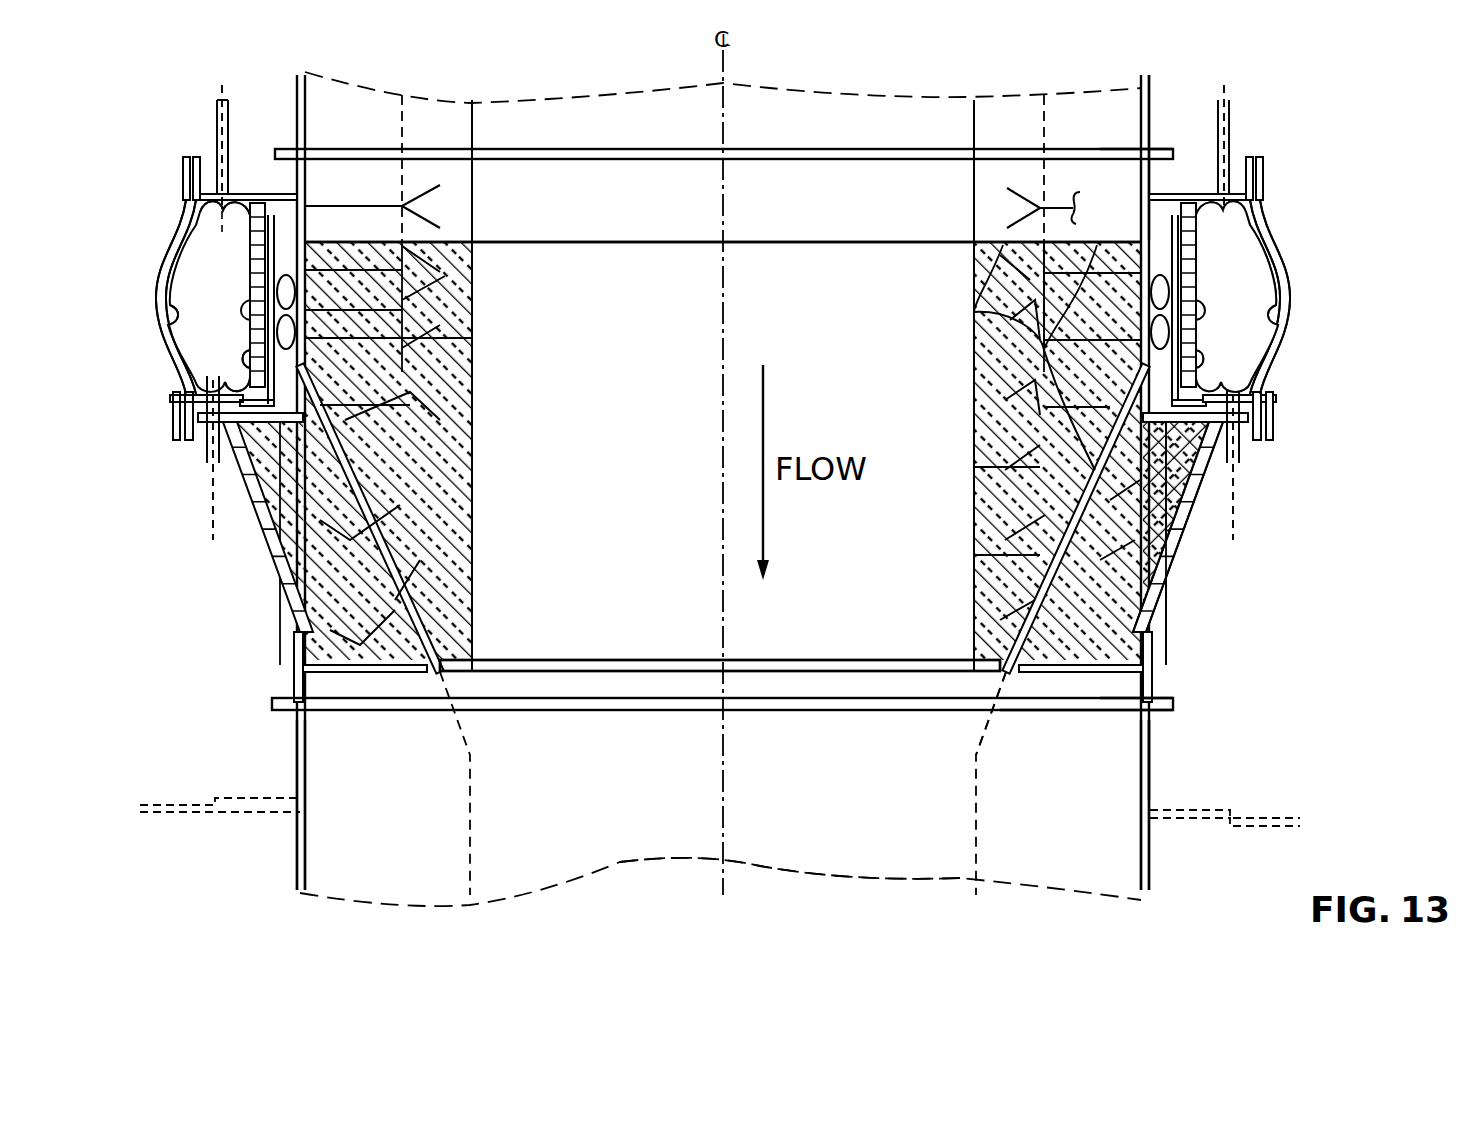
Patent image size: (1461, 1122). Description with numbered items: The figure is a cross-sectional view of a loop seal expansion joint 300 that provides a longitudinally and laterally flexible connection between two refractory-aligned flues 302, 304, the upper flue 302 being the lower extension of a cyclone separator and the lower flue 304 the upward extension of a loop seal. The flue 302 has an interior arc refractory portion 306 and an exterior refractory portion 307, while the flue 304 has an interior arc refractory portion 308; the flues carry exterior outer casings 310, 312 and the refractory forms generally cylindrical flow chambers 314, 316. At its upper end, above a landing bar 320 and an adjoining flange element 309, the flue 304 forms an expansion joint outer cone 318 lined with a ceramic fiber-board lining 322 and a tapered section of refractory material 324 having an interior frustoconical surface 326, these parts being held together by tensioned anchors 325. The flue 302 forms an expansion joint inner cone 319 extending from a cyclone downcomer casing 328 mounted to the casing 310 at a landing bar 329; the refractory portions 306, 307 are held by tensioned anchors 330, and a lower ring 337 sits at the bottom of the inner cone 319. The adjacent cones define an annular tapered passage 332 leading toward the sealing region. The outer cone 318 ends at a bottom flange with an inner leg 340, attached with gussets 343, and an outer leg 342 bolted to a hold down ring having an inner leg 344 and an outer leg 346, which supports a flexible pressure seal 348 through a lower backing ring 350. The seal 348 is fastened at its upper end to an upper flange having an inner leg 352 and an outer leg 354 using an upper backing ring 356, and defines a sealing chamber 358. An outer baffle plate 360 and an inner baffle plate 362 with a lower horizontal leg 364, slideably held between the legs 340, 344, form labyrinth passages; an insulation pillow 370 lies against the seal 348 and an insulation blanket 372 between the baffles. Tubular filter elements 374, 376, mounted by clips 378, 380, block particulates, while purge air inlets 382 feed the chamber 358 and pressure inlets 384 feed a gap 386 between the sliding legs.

The expansion joint 300 is at (1295, 668).
The flue 302 is at (1099, 126).
The flue 304 is at (1105, 862).
The interior arc refractory portion 306 is at (1003, 245).
The exterior refractory portion 307 is at (1097, 245).
The interior arc refractory portion 308 is at (345, 770).
The lower flange plate 309 is at (1128, 702).
The exterior outer casing 310 is at (1152, 98).
The exterior outer casing 312 is at (1150, 768).
The flow chamber 314 is at (858, 282).
The flow chamber 316 is at (920, 840).
The expansion joint outer cone 318 is at (1180, 555).
The expansion joint inner cone 319 is at (1010, 555).
The landing bar 320 is at (1176, 705).
The ceramic fiber-board lining 322 is at (1165, 583).
The tapered section of refractory material 324 is at (1127, 613).
The anchors 325 is at (1141, 678).
The interior frustoconical surface 326 is at (1043, 678).
The cyclone downcomer casing 328 is at (1182, 282).
The landing bar 329 is at (1173, 163).
The tensioned anchors 330 is at (1010, 315).
The annular tapered passage 332 is at (1187, 520).
The lower ring 337 is at (822, 670).
The inner leg 340 is at (1247, 445).
The outer leg 342 is at (198, 440).
The gussets 343 is at (1240, 500).
The inner leg 344 is at (196, 392).
The outer leg 346 is at (175, 428).
The flexible pressure seal 348 is at (172, 268).
The lower backing ring 350 is at (173, 410).
The inner leg 352 is at (236, 192).
The outer leg 354 is at (213, 165).
The upper backing ring 356 is at (182, 182).
The sealing chamber 358 is at (163, 296).
The outer ring baffle plate 360 is at (267, 202).
The inner baffle plate 362 is at (268, 245).
The lower horizontal leg 364 is at (207, 470).
The insulation pillow 370 is at (200, 298).
The insulation blanket 372 is at (290, 328).
The tubular filter element 374 is at (300, 345).
The tubular filter element 376 is at (290, 255).
The clips 378 is at (242, 266).
The clips 380 is at (236, 362).
The inlets 382 is at (232, 170).
The pressure inlets 384 is at (220, 515).
The gap 386 is at (172, 398).